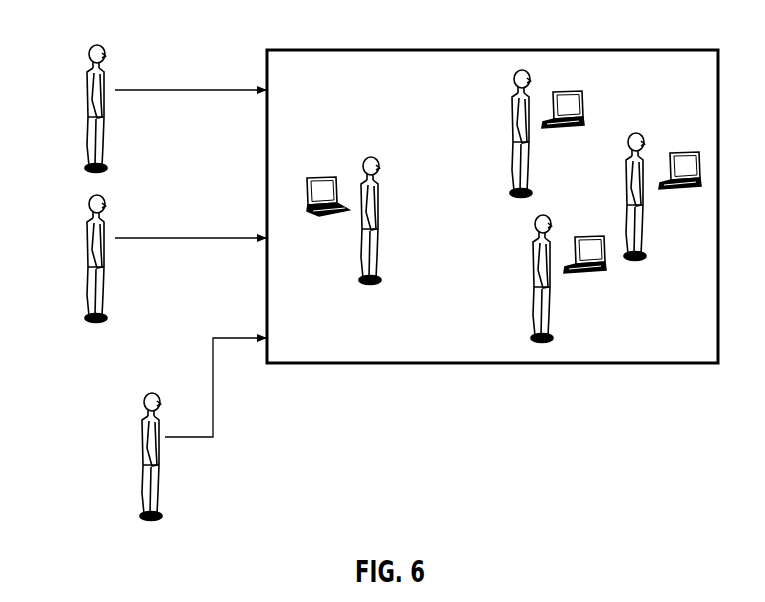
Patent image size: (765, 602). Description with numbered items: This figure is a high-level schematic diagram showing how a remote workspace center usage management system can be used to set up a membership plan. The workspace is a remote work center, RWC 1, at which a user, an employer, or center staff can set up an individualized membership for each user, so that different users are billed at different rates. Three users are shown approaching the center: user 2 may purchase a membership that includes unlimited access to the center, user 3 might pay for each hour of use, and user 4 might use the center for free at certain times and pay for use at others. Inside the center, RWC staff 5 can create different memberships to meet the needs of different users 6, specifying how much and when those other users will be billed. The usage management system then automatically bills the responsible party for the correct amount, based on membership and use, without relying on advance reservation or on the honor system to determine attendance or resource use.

The remote work center 1 is at (692, 48).
The user 2 is at (86, 88).
The user 3 is at (86, 238).
The user 4 is at (141, 437).
The RWC staff 5 is at (383, 200).
The users 6 is at (512, 113).